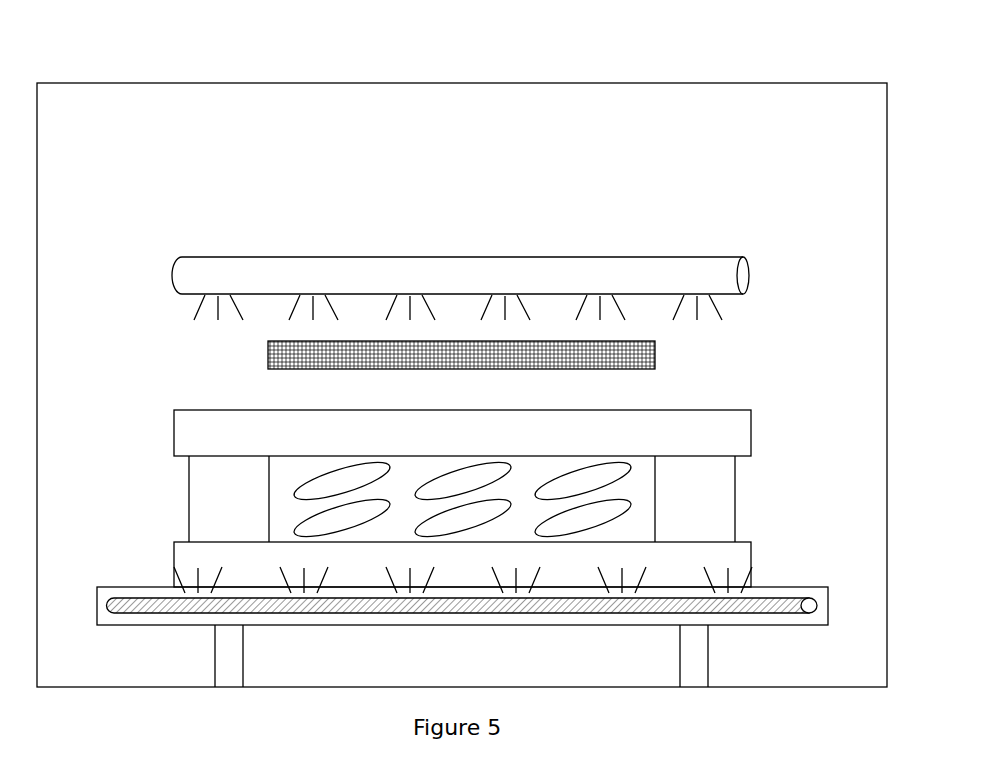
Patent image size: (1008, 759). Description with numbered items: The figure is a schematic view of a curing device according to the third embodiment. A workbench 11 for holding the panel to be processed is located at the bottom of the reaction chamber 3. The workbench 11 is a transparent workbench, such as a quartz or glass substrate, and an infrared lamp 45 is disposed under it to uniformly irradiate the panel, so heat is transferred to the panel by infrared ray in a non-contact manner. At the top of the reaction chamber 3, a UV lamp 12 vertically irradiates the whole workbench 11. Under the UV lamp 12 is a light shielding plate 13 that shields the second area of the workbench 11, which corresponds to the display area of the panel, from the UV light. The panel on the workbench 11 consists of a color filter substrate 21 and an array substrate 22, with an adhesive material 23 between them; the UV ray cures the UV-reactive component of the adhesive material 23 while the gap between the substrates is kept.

The reaction chamber 3 is at (757, 83).
The workbench 11 is at (738, 595).
The UV lamp 12 is at (745, 284).
The light shielding plate 13 is at (616, 357).
The color filter substrate 21 is at (722, 430).
The array substrate 22 is at (722, 565).
The adhesive material 23 is at (722, 498).
The infrared lamp 45 is at (753, 608).